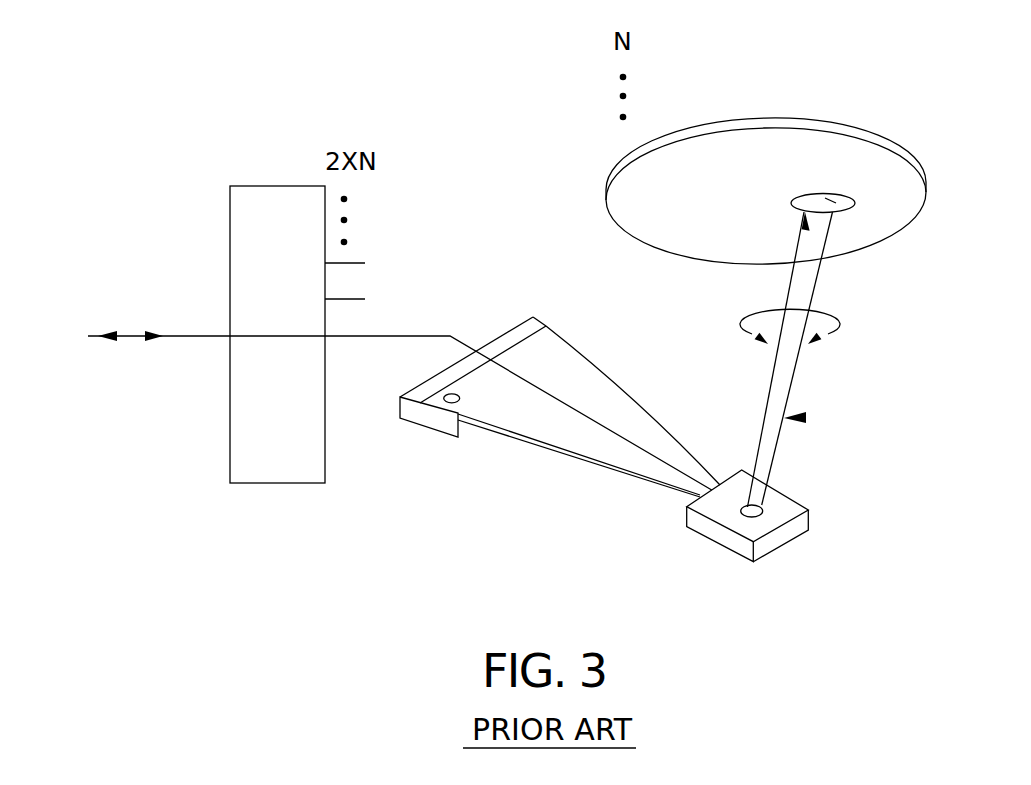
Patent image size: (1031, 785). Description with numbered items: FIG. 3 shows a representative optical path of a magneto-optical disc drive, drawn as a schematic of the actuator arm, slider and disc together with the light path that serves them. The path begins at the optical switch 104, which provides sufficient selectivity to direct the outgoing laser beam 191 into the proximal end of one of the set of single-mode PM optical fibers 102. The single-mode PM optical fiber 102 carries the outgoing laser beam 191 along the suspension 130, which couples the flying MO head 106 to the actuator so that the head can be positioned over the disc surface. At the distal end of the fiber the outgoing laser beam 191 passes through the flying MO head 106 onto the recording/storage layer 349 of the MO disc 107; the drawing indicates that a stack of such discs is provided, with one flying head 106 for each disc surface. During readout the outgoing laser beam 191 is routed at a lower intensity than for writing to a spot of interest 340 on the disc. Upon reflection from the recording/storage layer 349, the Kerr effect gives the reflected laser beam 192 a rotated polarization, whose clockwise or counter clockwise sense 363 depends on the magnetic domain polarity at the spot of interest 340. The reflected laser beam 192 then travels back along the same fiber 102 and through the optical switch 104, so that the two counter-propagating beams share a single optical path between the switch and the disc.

The single-mode PM optical fiber 102 is at (457, 342).
The optical switch 104 is at (265, 186).
The flying MO head 106 is at (433, 435).
The MO disc 107 is at (598, 158).
The suspension 130 is at (551, 448).
The outgoing laser beam 191 is at (163, 342).
The reflected laser beam 192 is at (97, 333).
The spot of interest 340 is at (855, 205).
The recording/storage layer 349 is at (780, 155).
The clockwise or counter clockwise sense 363 is at (837, 317).